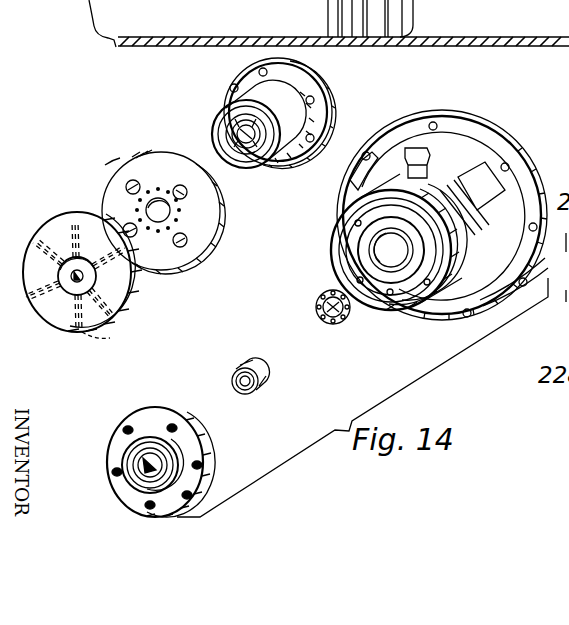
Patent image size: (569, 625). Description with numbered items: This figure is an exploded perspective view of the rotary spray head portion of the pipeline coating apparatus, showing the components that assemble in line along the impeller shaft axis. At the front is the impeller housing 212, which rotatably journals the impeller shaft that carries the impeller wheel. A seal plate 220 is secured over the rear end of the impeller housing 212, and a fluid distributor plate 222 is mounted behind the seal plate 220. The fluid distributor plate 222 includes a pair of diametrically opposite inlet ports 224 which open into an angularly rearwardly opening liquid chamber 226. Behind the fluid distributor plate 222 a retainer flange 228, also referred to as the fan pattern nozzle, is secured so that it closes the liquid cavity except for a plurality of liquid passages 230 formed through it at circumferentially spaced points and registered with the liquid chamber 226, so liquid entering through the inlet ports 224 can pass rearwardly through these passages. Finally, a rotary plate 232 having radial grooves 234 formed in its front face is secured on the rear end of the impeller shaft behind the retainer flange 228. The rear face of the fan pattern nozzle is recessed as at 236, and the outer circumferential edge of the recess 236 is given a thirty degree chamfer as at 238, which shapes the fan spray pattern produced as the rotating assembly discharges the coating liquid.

The impeller housing 212 is at (452, 314).
The seal plate 220 is at (190, 445).
The fluid distributor plate 222 is at (265, 92).
The inlet ports 224 is at (292, 148).
The liquid chamber 226 is at (233, 133).
The retainer flange 228 is at (203, 222).
The liquid passages 230 is at (162, 224).
The rotary plate 232 is at (568, 326).
The radial grooves 234 is at (100, 333).
The recess 236 is at (117, 202).
The chamfer 238 is at (103, 200).